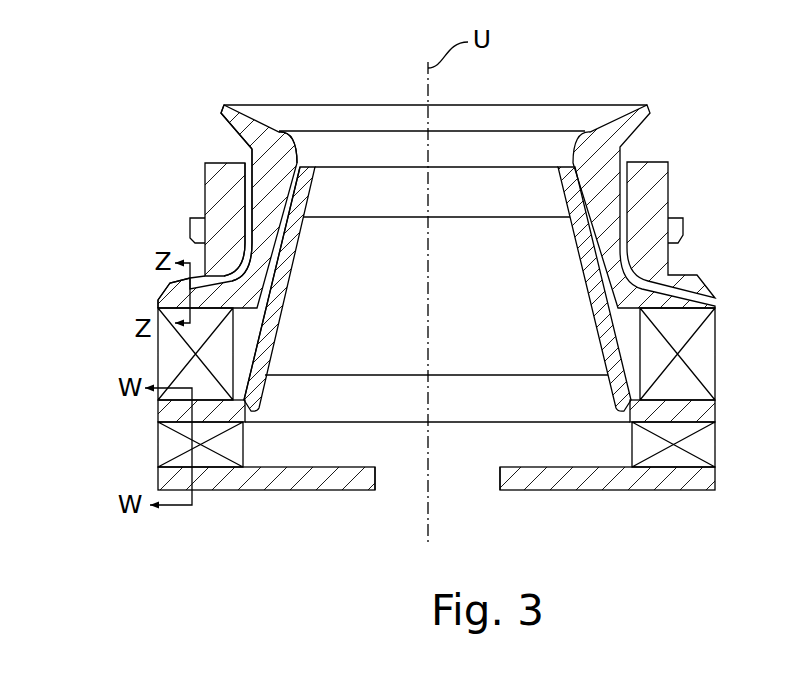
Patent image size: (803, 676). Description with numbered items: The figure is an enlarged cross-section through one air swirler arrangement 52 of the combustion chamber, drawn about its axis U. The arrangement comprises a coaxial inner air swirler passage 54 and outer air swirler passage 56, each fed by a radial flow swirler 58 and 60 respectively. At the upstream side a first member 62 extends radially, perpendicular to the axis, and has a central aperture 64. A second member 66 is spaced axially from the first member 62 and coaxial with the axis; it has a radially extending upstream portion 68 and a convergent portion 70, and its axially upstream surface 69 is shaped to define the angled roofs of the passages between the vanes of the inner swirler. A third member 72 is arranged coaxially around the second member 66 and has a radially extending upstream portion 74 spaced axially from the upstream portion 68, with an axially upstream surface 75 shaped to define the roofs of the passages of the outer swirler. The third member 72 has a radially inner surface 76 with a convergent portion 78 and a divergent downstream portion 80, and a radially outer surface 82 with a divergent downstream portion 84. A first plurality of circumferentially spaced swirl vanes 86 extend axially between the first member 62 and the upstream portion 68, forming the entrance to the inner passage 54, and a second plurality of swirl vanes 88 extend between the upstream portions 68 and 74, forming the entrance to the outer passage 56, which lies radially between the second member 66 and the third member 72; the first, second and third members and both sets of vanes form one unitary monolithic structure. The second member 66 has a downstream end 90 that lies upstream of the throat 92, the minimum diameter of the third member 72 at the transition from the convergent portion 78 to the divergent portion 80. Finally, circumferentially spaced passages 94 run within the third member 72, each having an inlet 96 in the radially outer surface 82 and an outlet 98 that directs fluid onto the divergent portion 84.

The air swirler arrangement 52 is at (674, 141).
The inner air swirler passage 54 is at (428, 303).
The outer air swirler passage 56 is at (590, 217).
The radial flow swirler 58 is at (219, 472).
The radial flow swirler 60 is at (226, 372).
The first member 62 is at (583, 477).
The central aperture 64 is at (463, 475).
The second member 66 is at (288, 270).
The radially extending upstream portion 68 is at (705, 410).
The axially upstream surface 69 is at (183, 428).
The convergent portion 70 is at (296, 232).
The third member 72 is at (215, 175).
The radially extending upstream portion 74 is at (172, 285).
The axially upstream surface 75 is at (688, 313).
The radially inner surface 76 is at (250, 200).
The convergent portion 78 is at (306, 182).
The divergent downstream portion 80 is at (270, 123).
The radially outer surface 82 is at (282, 210).
The divergent downstream portion 84 is at (232, 130).
The first plurality of circumferentially spaced swirl vanes 86 is at (705, 445).
The second plurality of circumferentially spaced swirl vanes 88 is at (705, 353).
The downstream end 90 is at (564, 169).
The throat 92 is at (298, 140).
The circumferentially spaced passages 94 is at (247, 256).
The inlet 96 is at (167, 303).
The outlet 98 is at (250, 160).